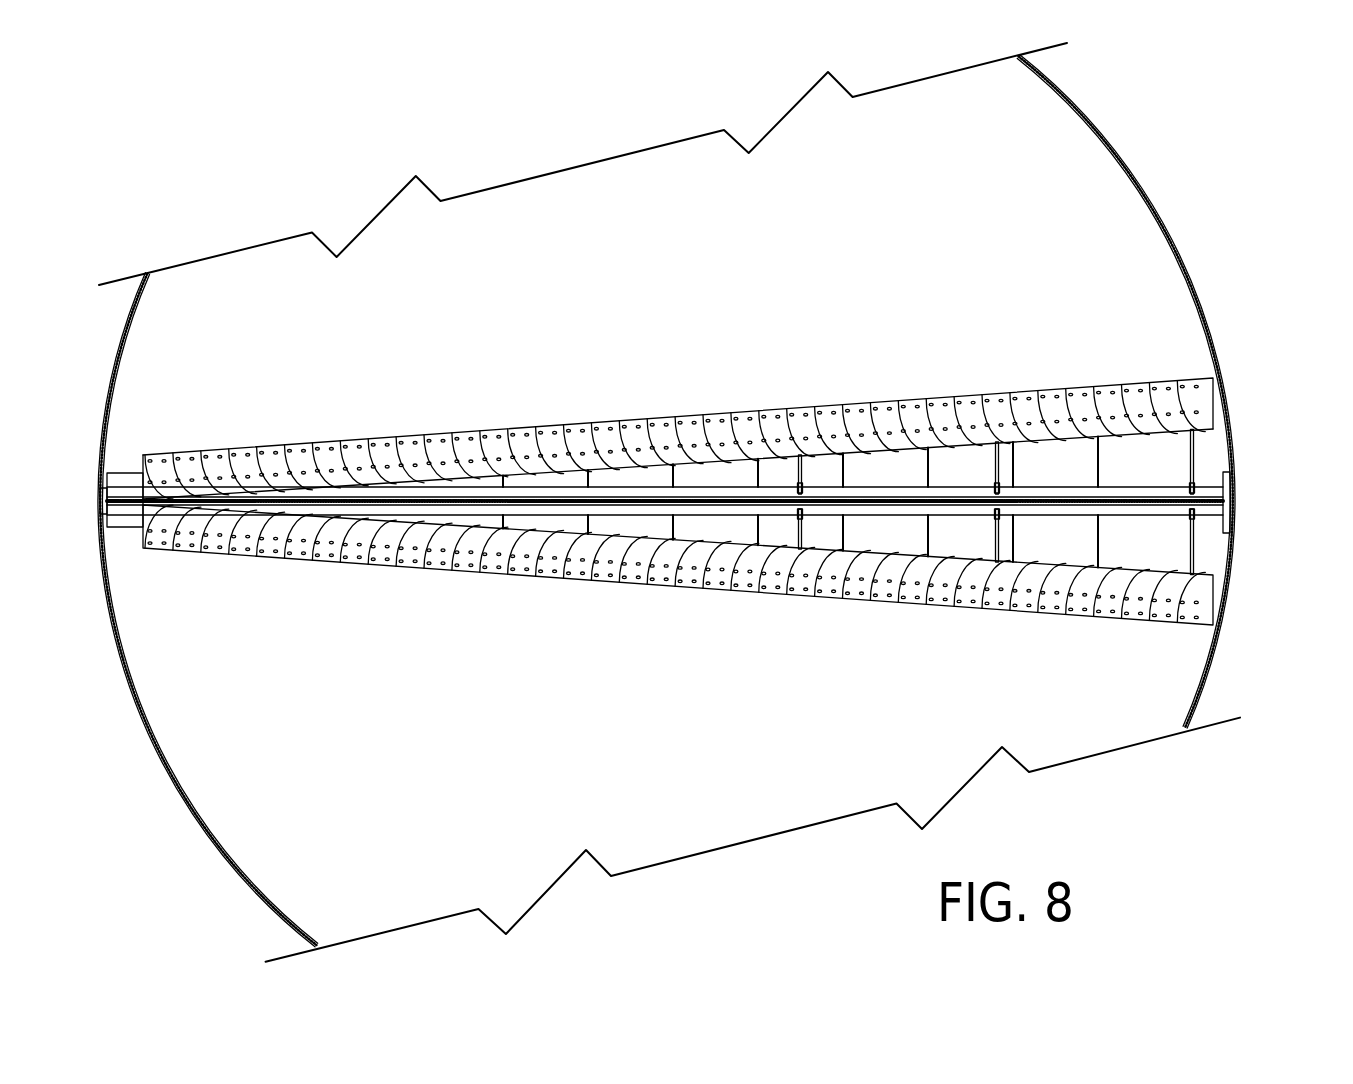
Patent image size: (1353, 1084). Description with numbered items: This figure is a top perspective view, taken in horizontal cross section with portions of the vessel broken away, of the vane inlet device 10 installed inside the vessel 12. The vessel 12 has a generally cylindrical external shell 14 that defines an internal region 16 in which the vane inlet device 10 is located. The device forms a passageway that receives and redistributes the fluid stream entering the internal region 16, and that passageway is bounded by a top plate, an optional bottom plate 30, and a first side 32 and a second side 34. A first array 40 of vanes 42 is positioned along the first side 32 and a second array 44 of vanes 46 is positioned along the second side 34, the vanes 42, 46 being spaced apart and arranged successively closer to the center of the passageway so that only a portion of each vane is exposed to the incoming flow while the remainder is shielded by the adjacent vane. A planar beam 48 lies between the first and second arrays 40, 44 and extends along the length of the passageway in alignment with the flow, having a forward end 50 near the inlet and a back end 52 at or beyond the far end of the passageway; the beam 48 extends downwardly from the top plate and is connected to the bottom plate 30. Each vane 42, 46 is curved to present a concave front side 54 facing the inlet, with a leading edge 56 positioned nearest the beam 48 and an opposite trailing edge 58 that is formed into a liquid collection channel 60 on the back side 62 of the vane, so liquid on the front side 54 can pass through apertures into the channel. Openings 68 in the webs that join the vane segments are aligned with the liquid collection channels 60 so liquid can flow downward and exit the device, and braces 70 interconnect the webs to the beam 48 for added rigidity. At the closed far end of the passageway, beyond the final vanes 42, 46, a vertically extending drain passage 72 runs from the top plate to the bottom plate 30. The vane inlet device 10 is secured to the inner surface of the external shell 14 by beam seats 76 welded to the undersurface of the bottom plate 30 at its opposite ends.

The vane inlet device 10 is at (752, 405).
The vessel 12 is at (1118, 140).
The external shell 14 is at (1138, 184).
The internal region 16 is at (1160, 290).
The bottom plate 30 is at (667, 408).
The first side 32 is at (990, 613).
The second side 34 is at (912, 398).
The first array 40 is at (782, 597).
The vanes 42 is at (825, 600).
The second array 44 is at (621, 415).
The vanes 46 is at (558, 446).
The planar beam 48 is at (1128, 505).
The forward end 50 is at (1223, 493).
The back end 52 is at (102, 510).
The front side 54 is at (1095, 408).
The leading edge 56 is at (1077, 435).
The trailing edge 58 is at (1150, 383).
The liquid collection channel 60 is at (953, 402).
The back side 62 is at (1063, 408).
The openings 68 is at (822, 410).
The braces 70 is at (1190, 453).
The drain passage 72 is at (122, 470).
The beam seats 76 is at (108, 473).